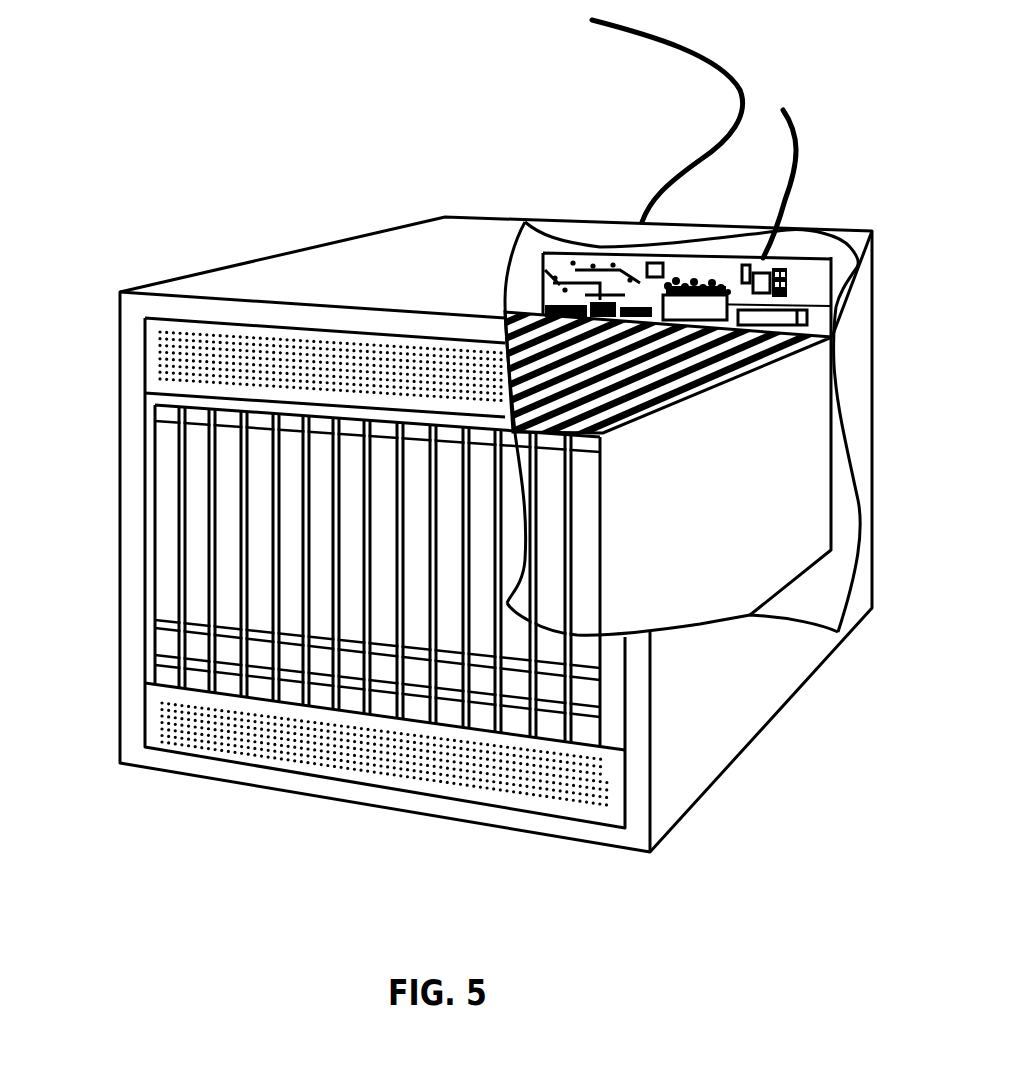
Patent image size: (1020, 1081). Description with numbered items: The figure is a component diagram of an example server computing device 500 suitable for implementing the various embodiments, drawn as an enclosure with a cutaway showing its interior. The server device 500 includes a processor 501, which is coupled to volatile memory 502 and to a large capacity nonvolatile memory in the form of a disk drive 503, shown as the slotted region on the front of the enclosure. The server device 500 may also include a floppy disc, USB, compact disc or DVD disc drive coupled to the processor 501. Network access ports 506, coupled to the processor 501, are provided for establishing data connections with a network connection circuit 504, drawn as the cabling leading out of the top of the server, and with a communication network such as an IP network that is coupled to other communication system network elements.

The server computing device 500 is at (353, 232).
The processor 501 is at (697, 313).
The volatile memory 502 is at (802, 312).
The disk drive 503 is at (230, 488).
The network connection circuit 504 is at (743, 92).
The network access ports 506 is at (543, 307).